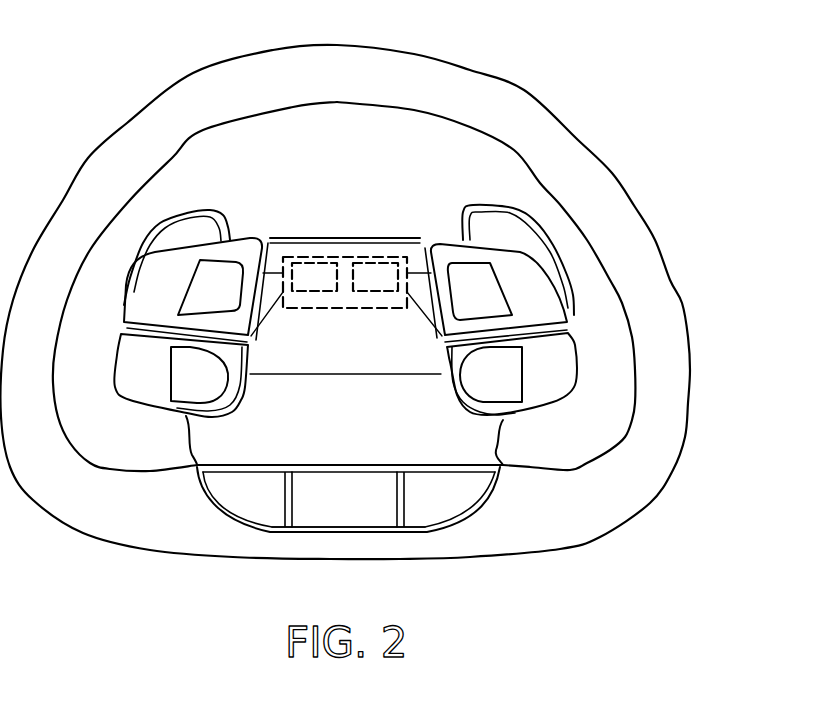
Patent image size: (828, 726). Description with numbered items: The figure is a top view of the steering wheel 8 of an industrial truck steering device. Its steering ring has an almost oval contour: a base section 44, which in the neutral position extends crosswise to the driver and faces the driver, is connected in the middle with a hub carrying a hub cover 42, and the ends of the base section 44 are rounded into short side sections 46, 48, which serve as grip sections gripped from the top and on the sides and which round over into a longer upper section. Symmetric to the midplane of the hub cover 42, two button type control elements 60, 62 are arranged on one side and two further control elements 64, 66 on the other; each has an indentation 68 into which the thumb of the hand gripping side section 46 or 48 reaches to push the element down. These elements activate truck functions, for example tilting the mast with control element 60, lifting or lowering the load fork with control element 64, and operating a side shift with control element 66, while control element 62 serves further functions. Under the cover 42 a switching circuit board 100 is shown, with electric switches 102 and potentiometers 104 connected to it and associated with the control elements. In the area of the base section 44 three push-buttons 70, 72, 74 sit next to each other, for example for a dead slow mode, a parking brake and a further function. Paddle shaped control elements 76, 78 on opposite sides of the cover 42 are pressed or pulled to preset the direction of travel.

The steering wheel 8 is at (359, 282).
The hub cover 42 is at (385, 363).
The base section 44 is at (134, 520).
The side section 46 is at (133, 130).
The side section 48 is at (655, 253).
The control element 60 is at (211, 251).
The control element 62 is at (144, 397).
The control element 64 is at (496, 254).
The control element 66 is at (541, 396).
The indentation 68 is at (228, 270).
The push-button 70 is at (258, 517).
The push-button 72 is at (338, 517).
The push-button 74 is at (436, 517).
The paddle shaped control element 76 is at (190, 221).
The paddle shaped control element 78 is at (497, 223).
The switching circuit board 100 is at (347, 280).
The electric switches 102 is at (313, 272).
The potentiometers 104 is at (373, 272).